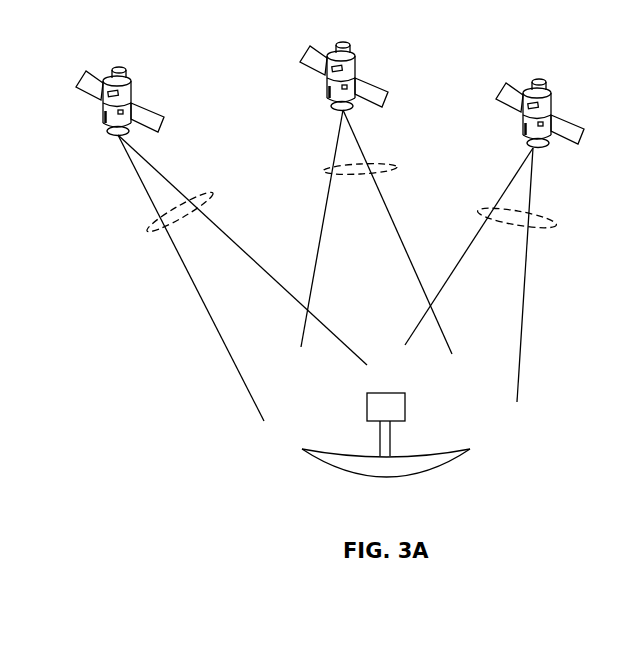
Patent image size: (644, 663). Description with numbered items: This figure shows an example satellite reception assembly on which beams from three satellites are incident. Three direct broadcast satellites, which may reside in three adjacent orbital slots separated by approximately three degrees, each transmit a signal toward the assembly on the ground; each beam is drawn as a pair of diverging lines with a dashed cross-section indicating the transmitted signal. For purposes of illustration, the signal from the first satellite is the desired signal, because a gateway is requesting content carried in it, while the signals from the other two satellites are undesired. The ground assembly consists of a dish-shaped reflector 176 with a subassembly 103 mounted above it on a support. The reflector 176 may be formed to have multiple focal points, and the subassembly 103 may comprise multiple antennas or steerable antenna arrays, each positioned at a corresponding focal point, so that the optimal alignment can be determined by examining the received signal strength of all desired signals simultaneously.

The subassembly 103 is at (405, 405).
The reflector 176 is at (478, 439).